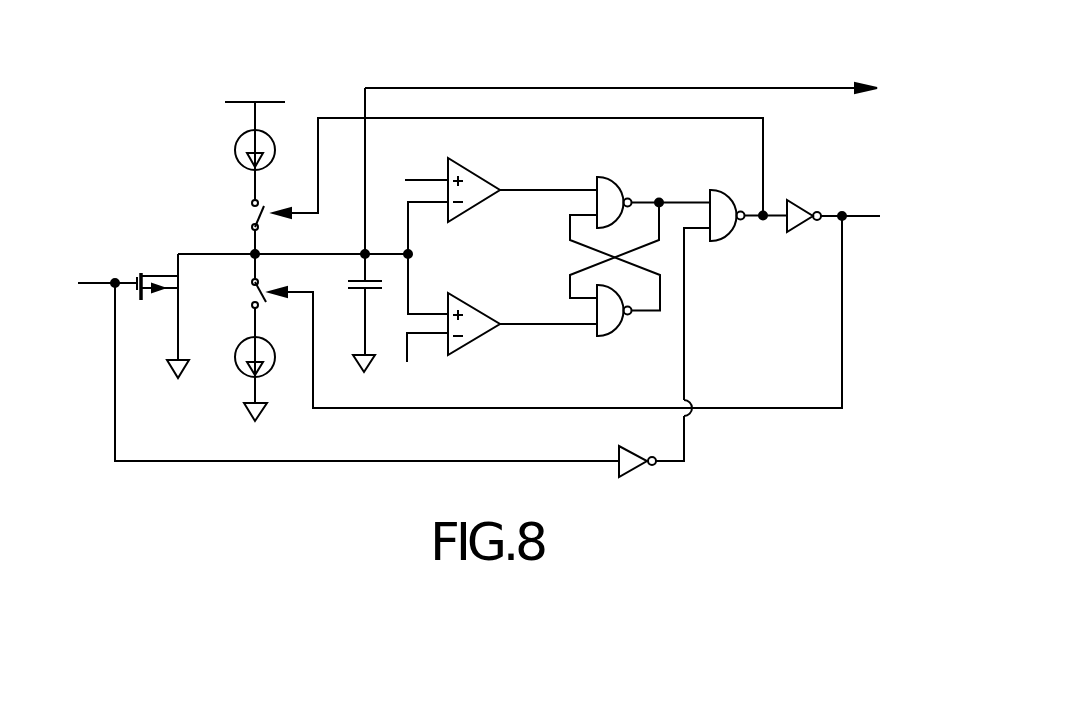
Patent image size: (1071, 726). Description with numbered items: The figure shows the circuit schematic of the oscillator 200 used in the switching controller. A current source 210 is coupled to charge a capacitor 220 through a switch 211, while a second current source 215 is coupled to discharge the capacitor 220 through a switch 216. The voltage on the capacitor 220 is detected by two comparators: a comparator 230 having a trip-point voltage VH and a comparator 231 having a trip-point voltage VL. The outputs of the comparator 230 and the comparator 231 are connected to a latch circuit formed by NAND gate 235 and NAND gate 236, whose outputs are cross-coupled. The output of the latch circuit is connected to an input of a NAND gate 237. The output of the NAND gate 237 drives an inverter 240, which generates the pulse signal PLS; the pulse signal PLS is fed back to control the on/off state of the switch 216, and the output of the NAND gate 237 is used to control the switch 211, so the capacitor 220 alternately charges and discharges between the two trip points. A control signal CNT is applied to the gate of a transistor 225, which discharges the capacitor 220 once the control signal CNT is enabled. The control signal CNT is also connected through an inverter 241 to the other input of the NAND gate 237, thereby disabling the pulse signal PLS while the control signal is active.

The oscillator 200 is at (793, 43).
The current source 210 is at (238, 142).
The switch 211 is at (252, 212).
The current source 215 is at (244, 376).
The switch 216 is at (250, 300).
The capacitor 220 is at (358, 292).
The transistor 225 is at (138, 272).
The comparator 230 is at (480, 172).
The comparator 231 is at (482, 306).
The NAND gate 235 is at (616, 177).
The NAND gate 236 is at (618, 336).
The NAND gate 237 is at (728, 241).
The inverter 240 is at (800, 200).
The inverter 241 is at (633, 476).